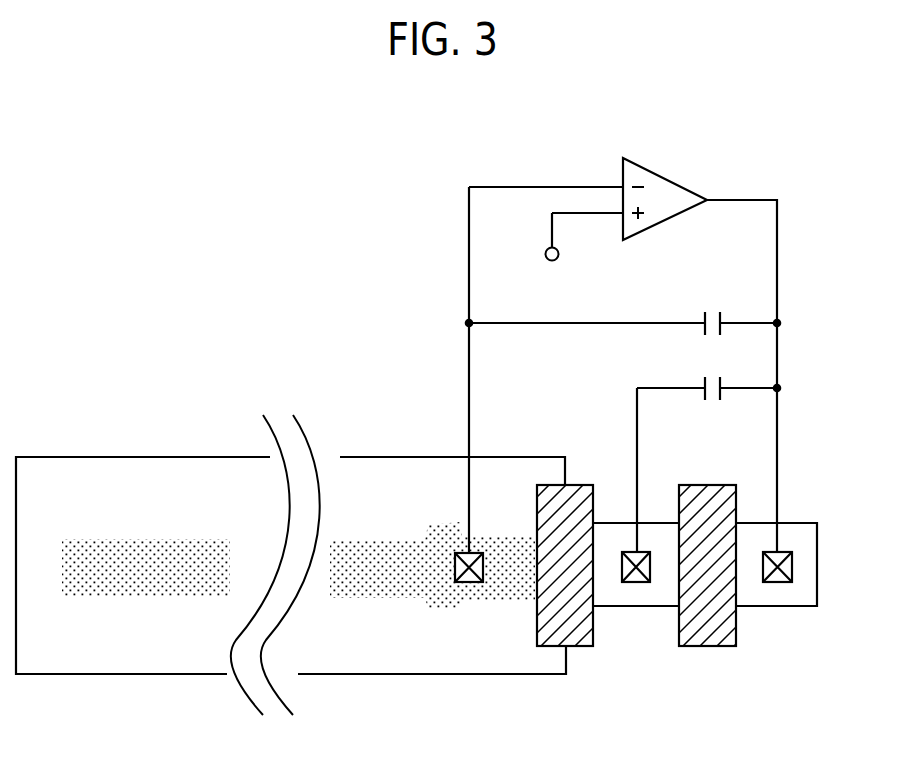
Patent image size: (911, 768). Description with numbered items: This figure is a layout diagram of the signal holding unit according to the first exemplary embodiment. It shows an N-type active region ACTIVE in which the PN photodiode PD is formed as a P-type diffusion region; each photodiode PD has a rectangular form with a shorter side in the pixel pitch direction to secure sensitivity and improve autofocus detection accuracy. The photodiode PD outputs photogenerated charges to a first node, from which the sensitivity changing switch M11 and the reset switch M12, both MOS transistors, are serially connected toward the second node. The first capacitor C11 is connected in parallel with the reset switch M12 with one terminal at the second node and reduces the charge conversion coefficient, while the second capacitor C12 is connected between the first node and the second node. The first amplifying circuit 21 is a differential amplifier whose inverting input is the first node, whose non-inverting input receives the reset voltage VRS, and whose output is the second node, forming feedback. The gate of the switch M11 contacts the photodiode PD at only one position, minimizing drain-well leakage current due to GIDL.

The first amplifying circuit 21 is at (667, 173).
The second capacitor C12 is at (712, 307).
The first capacitor C11 is at (712, 370).
The sensitivity changing switch M11 is at (578, 648).
The reset switch M12 is at (708, 648).
The photodiode PD is at (439, 527).
The N-type active region ACTIVE is at (207, 487).
The reset voltage VRS is at (555, 241).